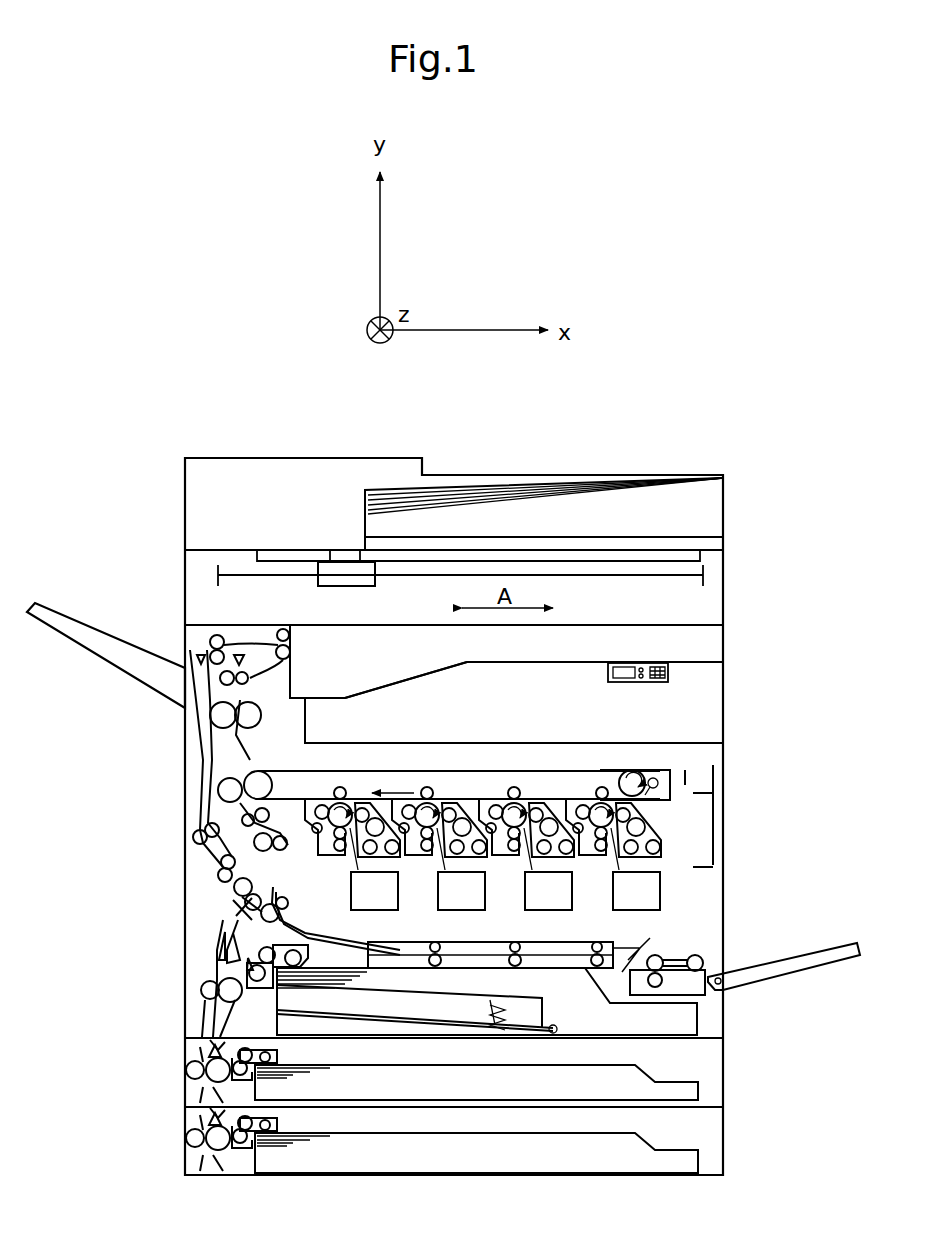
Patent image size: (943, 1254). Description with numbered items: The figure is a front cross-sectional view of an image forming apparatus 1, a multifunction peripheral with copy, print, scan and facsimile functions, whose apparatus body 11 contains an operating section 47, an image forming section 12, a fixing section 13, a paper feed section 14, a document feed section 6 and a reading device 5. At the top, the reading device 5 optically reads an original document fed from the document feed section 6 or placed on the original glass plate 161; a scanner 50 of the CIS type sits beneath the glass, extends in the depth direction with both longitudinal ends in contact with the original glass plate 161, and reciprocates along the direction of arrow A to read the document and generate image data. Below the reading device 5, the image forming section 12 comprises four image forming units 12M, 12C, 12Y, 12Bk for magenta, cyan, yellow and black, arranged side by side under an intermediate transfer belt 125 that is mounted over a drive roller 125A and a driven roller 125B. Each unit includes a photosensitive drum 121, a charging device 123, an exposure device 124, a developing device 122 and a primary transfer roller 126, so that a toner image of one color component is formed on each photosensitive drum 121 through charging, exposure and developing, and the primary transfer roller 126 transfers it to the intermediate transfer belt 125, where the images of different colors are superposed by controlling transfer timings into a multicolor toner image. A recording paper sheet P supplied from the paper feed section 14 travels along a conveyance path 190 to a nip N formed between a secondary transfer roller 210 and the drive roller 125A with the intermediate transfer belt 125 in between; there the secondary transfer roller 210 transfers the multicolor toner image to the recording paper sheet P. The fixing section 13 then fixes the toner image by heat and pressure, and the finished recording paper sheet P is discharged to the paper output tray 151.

The image forming apparatus 1 is at (802, 526).
The reading device 5 is at (166, 582).
The document feed section 6 is at (571, 458).
The apparatus body 11 is at (727, 686).
The image forming section 12 is at (526, 791).
The image forming unit for black 12Bk is at (543, 822).
The image forming unit for yellow 12Y is at (430, 788).
The image forming unit for cyan 12C is at (518, 788).
The image forming unit for magenta 12M is at (602, 786).
The fixing section 13 is at (205, 718).
The paper feed section 14 is at (702, 1068).
The operating section 47 is at (670, 673).
The scanner 50 is at (312, 595).
The photosensitive drum 121 is at (605, 828).
The developing device 122 is at (665, 830).
The charging device 123 is at (600, 835).
The exposure device 124 is at (662, 888).
The intermediate transfer belt 125 is at (630, 772).
The drive roller 125A is at (266, 774).
The driven roller 125B is at (652, 778).
The primary transfer roller 126 is at (600, 788).
The paper output tray 151 is at (326, 700).
The original glass plate 161 is at (594, 556).
The conveyance path 190 is at (230, 772).
The secondary transfer roller 210 is at (218, 790).
The nip N is at (247, 745).
The recording paper sheet P is at (530, 992).